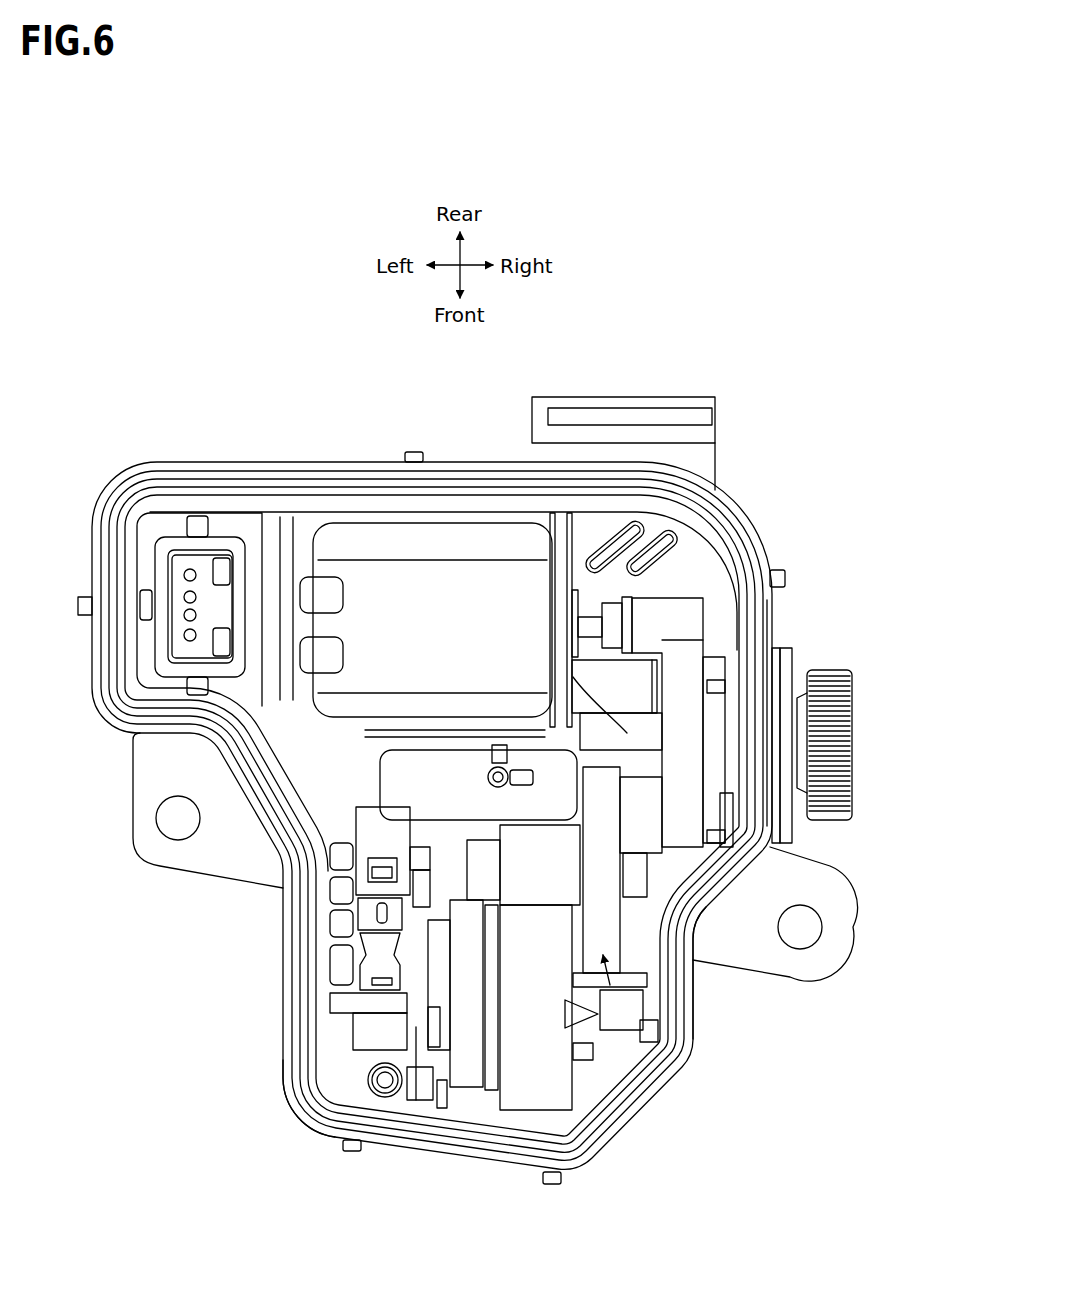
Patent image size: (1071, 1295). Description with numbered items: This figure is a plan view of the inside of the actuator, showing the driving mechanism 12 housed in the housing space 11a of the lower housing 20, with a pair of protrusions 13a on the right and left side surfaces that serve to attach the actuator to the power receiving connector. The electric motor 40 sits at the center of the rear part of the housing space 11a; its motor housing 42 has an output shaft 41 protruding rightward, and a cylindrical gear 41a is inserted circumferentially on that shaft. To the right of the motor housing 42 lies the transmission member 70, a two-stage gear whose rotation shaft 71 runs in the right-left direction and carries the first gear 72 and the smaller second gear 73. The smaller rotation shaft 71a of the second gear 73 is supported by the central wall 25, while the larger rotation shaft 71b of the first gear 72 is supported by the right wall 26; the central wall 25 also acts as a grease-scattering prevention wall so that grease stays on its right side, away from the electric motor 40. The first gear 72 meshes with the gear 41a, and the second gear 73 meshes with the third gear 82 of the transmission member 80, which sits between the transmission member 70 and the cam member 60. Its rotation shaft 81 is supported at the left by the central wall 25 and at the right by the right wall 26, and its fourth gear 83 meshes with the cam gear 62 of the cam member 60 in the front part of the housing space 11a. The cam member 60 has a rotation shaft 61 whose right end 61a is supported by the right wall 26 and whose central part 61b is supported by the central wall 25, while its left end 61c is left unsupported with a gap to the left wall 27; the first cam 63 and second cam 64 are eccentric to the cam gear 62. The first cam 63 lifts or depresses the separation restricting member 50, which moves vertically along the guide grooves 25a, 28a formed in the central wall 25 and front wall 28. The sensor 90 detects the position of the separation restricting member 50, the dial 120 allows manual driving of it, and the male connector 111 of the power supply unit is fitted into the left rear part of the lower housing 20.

The housing space 11a is at (587, 527).
The driving mechanism 12 is at (667, 560).
The protrusions 13a is at (132, 846).
The lower housing 20 is at (225, 461).
The central wall 25 is at (560, 530).
The guide groove 25a is at (447, 913).
The right wall 26 is at (694, 888).
The left wall 27 is at (320, 913).
The front wall 28 is at (337, 1108).
The guide groove 28a is at (440, 1105).
The electric motor 40 is at (416, 561).
The output shaft 41 is at (585, 623).
The cylindrical gear 41a is at (673, 620).
The motor housing 42 is at (432, 540).
The separation restricting member 50 is at (462, 1075).
The cam member 60 is at (578, 1070).
The rotation shaft 61 is at (632, 1025).
The right end 61a is at (612, 952).
The central part 61b is at (405, 1095).
The left end 61c is at (335, 1008).
The cam gear 62 is at (537, 1085).
The first cam 63 is at (490, 1070).
The second cam 64 is at (370, 1037).
The transmission member 70 is at (772, 850).
The rotation shaft 71 is at (664, 741).
The rotation shaft 71a is at (547, 730).
The rotation shaft 71b is at (713, 723).
The first gear 72 is at (685, 662).
The second gear 73 is at (572, 695).
The transmission member 80 is at (650, 1035).
The rotation shaft 81 is at (645, 890).
The third gear 82 is at (643, 970).
The fourth gear 83 is at (533, 847).
The sensor 90 is at (362, 830).
The male connector 111 is at (178, 575).
The dial 120 is at (853, 747).